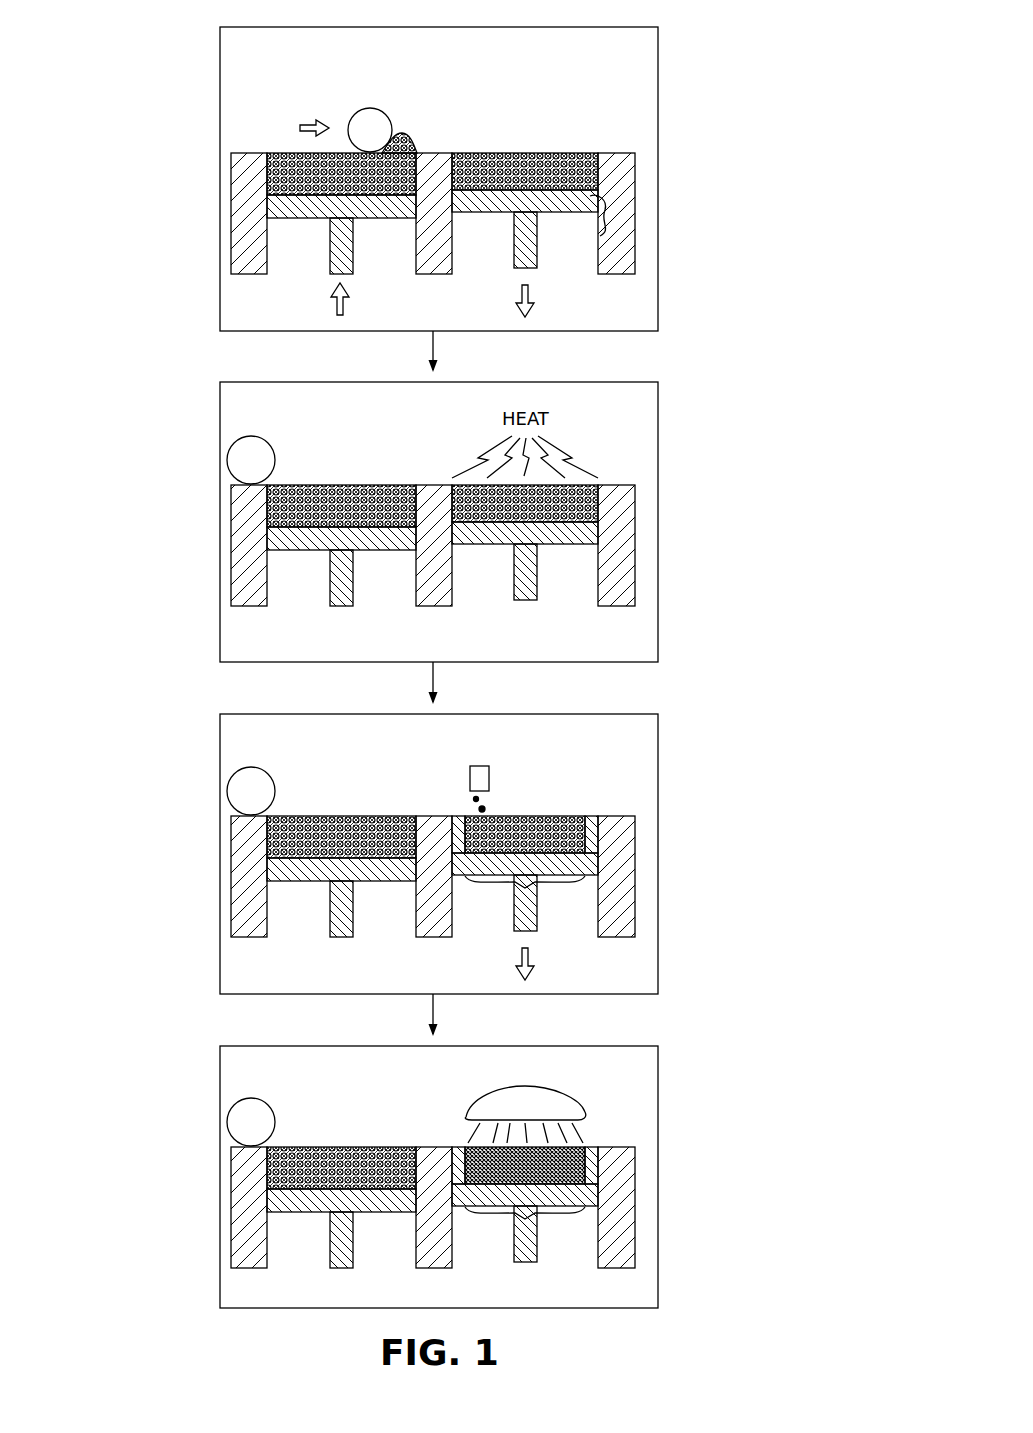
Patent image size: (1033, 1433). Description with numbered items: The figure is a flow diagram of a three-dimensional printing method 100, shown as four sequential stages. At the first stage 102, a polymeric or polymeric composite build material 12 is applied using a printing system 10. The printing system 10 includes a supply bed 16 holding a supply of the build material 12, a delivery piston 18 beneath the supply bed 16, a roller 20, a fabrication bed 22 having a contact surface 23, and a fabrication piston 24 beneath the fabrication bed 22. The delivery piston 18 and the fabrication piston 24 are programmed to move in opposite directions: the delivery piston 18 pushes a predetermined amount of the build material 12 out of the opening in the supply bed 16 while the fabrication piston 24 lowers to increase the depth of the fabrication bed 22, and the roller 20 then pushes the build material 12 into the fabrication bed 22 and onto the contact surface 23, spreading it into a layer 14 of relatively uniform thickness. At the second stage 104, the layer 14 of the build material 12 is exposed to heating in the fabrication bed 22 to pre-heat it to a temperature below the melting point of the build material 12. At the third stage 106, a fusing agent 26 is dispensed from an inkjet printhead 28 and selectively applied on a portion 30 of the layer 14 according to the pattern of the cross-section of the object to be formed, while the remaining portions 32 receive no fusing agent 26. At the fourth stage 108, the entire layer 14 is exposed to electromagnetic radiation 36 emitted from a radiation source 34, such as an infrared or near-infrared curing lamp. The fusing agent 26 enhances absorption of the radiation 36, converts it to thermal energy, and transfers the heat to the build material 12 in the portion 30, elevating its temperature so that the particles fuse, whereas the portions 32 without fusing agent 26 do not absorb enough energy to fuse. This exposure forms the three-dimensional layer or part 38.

The 3D printing method 100 is at (125, 68).
The build material application step 102 is at (658, 172).
The heating step 104 is at (658, 520).
The fusing agent application step 106 is at (658, 848).
The radiation exposure step 108 is at (658, 1170).
The printing system 10 is at (340, 78).
The build material 12 is at (298, 152).
The layer 14 is at (576, 150).
The supply bed 16 is at (272, 152).
The delivery piston 18 is at (343, 263).
The roller 20 is at (368, 130).
The fabrication bed 22 is at (468, 152).
The contact surface 23 is at (600, 236).
The fabrication piston 24 is at (525, 254).
The fusing agent 26 is at (487, 808).
The inkjet printhead 28 is at (489, 772).
The portion 30 is at (525, 1062).
The portions 32 is at (458, 812).
The radiation source 34 is at (525, 1092).
The electromagnetic radiation 36 is at (580, 1116).
The 3D part 38 is at (493, 1143).